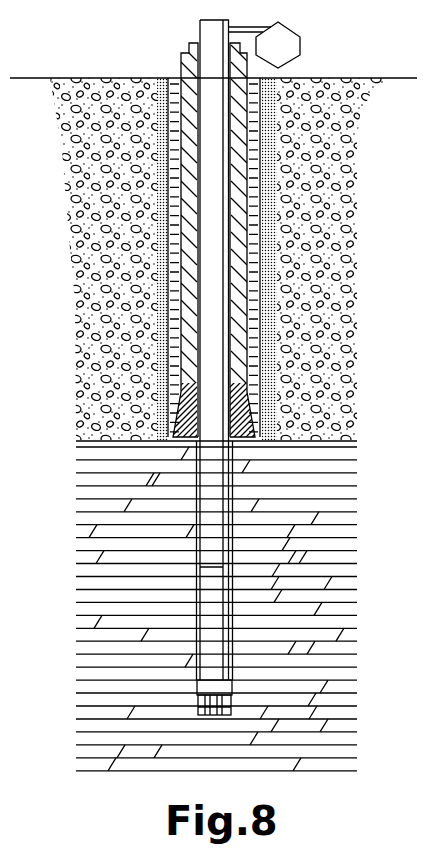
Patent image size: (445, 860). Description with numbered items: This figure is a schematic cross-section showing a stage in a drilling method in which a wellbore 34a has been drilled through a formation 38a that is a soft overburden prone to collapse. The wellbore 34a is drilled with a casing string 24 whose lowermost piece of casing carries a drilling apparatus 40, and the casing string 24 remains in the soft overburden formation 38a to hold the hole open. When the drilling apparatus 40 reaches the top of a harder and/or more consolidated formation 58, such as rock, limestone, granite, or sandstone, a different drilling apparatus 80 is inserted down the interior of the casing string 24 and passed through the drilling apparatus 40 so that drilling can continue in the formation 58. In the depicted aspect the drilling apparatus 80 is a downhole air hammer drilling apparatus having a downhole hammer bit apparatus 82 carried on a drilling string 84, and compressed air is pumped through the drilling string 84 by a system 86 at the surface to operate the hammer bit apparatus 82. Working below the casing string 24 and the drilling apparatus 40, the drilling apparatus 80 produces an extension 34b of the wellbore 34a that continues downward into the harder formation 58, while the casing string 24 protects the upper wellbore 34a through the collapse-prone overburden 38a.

The compressed air system 86 is at (292, 45).
The casing string 24 is at (243, 131).
The wellbore 34a is at (265, 278).
The formation 38a is at (300, 320).
The drilling apparatus 40 is at (257, 428).
The formation 58 is at (332, 493).
The drilling string 84 is at (213, 548).
The extension of the wellbore 34b is at (240, 595).
The drilling apparatus 80 is at (213, 657).
The downhole hammer bit apparatus 82 is at (215, 688).